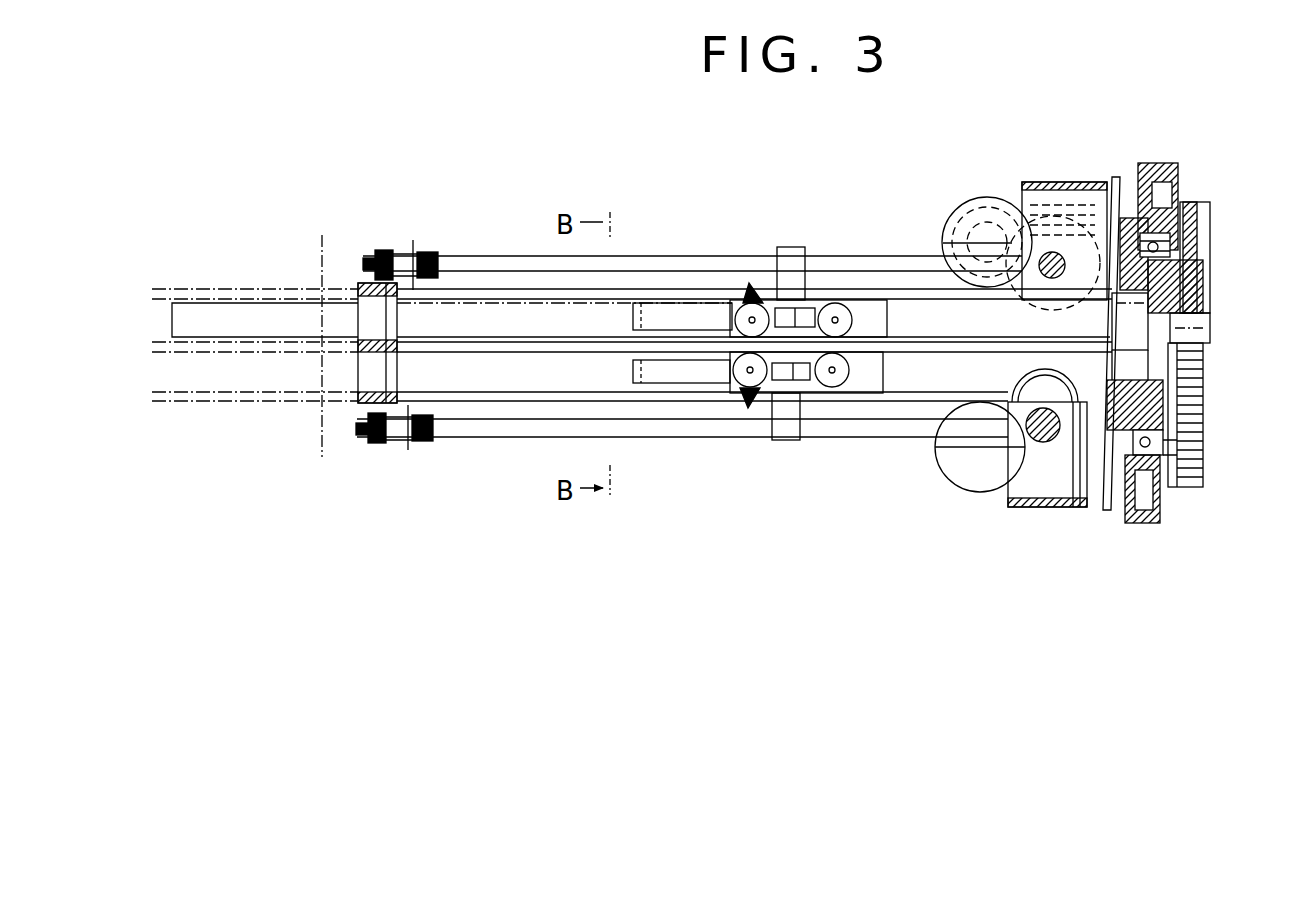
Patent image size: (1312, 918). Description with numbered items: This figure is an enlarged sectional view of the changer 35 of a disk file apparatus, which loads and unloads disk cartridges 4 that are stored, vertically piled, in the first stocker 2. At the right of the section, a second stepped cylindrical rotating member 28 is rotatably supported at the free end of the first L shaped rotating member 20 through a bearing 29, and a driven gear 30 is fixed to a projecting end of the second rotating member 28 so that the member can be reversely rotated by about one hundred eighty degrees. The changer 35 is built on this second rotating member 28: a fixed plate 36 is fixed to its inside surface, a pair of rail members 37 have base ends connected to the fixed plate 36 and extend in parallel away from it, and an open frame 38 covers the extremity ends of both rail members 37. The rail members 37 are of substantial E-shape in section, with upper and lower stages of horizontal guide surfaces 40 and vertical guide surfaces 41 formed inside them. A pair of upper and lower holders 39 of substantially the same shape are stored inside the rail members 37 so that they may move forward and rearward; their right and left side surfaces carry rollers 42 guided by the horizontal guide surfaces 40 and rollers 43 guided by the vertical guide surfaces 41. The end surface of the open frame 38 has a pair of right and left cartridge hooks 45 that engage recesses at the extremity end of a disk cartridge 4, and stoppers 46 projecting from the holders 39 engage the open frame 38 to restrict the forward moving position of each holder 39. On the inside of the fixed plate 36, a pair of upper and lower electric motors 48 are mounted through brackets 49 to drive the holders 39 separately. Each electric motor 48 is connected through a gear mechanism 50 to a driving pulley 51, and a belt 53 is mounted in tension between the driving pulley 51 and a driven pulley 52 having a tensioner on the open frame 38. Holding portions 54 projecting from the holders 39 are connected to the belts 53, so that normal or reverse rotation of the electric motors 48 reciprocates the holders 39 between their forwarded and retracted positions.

The first stocker 2 is at (322, 258).
The disk cartridge 4 is at (172, 308).
The first L shaped rotating member 20 is at (1143, 523).
The second stepped cylindrical rotating member 28 is at (1157, 274).
The bearing 29 is at (1163, 447).
The driven gear 30 is at (1203, 386).
The changer 35 is at (473, 288).
The fixed plate 36 is at (1121, 185).
The rail member 37 is at (603, 322).
The open frame 38 is at (366, 403).
The holder 39 is at (895, 300).
The horizontal guide surface 40 is at (521, 337).
The vertical guide surface 41 is at (623, 299).
The roller 42 is at (752, 303).
The roller 43 is at (835, 303).
The cartridge hook 45 is at (692, 314).
The stopper 46 is at (752, 284).
The electric motor 48 is at (985, 197).
The bracket 49 is at (1045, 182).
The gear mechanism 50 is at (1080, 215).
The driving pulley 51 is at (1012, 298).
The driven pulley 52 is at (422, 250).
The belt 53 is at (823, 262).
The holding portion 54 is at (793, 247).